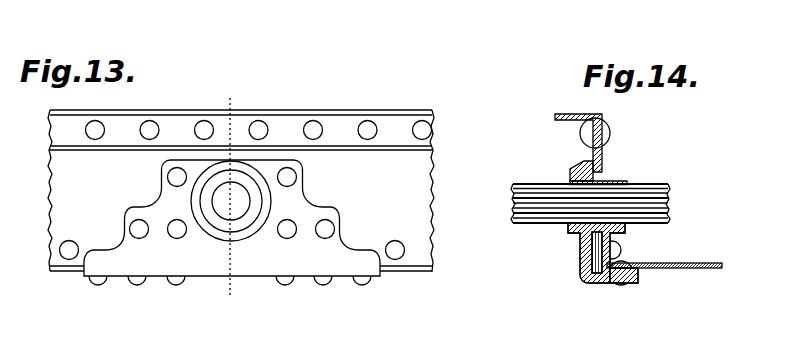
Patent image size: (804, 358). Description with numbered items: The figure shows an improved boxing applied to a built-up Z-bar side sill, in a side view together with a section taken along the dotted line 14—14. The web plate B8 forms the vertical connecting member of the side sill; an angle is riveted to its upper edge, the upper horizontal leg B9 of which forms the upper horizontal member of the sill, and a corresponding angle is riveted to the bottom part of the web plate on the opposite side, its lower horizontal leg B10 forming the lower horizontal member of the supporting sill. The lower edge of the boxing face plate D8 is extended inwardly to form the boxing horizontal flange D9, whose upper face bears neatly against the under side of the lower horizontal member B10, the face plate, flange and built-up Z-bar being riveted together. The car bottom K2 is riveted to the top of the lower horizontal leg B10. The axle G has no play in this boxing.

In FIG. 13, the web plate B8 is at (241, 191).
In FIG. 14, the web plate B8 is at (602, 156).
In FIG. 13, the upper horizontal leg B9 is at (432, 111).
In FIG. 14, the upper horizontal leg B9 is at (556, 113).
In FIG. 13, the lower horizontal leg B10 is at (402, 268).
In FIG. 14, the lower horizontal leg B10 is at (638, 272).
In FIG. 13, the boxing face plate D8 is at (157, 215).
In FIG. 14, the boxing horizontal flange D9 is at (605, 283).
In FIG. 13, the axle G is at (223, 207).
In FIG. 14, the axle G is at (538, 208).
In FIG. 14, the car bottom K2 is at (688, 265).
In FIG. 13, the dotted line 14— 14 is at (231, 199).